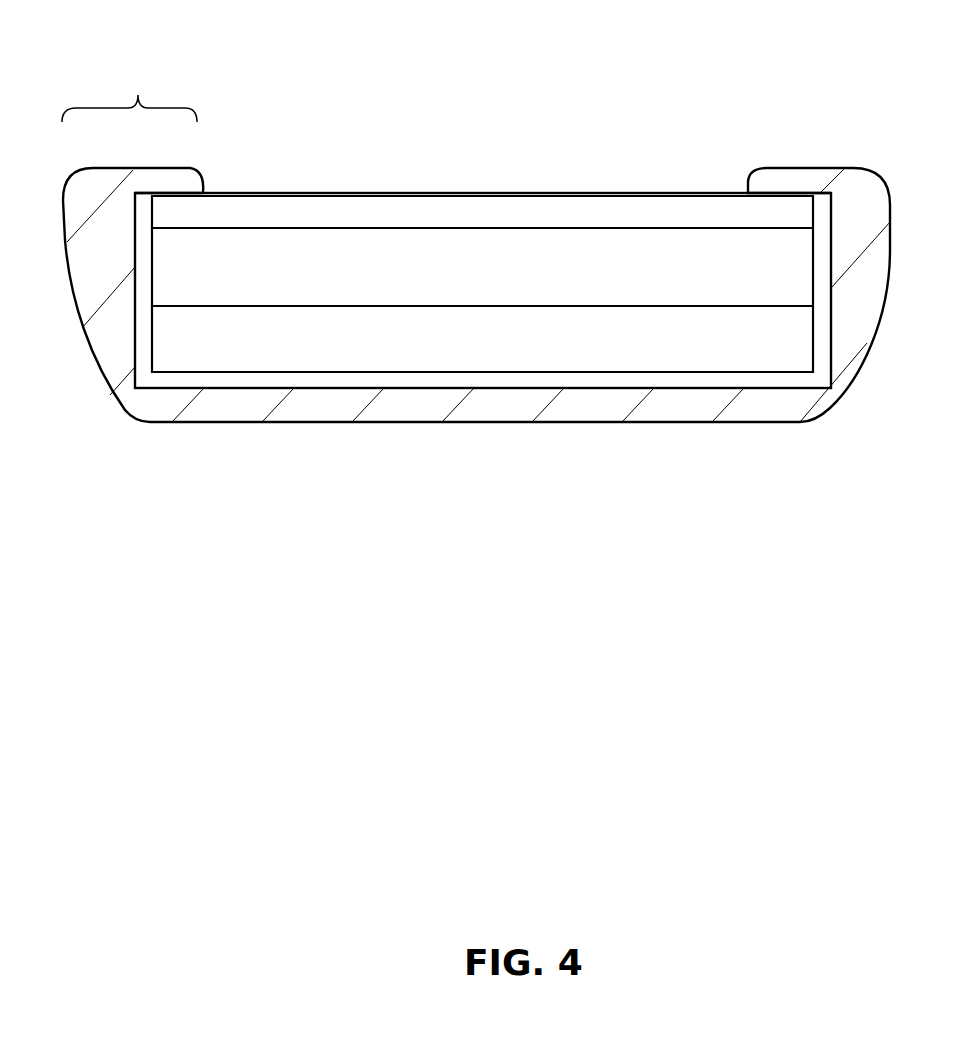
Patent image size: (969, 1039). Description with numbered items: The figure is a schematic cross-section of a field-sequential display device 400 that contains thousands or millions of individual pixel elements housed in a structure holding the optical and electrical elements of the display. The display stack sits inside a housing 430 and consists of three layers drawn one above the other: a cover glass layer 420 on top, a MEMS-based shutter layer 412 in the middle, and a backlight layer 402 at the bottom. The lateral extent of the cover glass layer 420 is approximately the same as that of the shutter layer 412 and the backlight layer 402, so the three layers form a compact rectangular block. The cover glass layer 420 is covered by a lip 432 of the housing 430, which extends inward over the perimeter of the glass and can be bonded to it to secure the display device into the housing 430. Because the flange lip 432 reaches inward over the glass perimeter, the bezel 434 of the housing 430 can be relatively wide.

The field-sequential display device 400 is at (487, 116).
The backlight layer 402 is at (482, 339).
The MEMS-based shutter layer 412 is at (482, 267).
The cover glass layer 420 is at (482, 212).
The housing 430 is at (220, 422).
The lip 432 is at (177, 182).
The bezel 434 is at (129, 90).